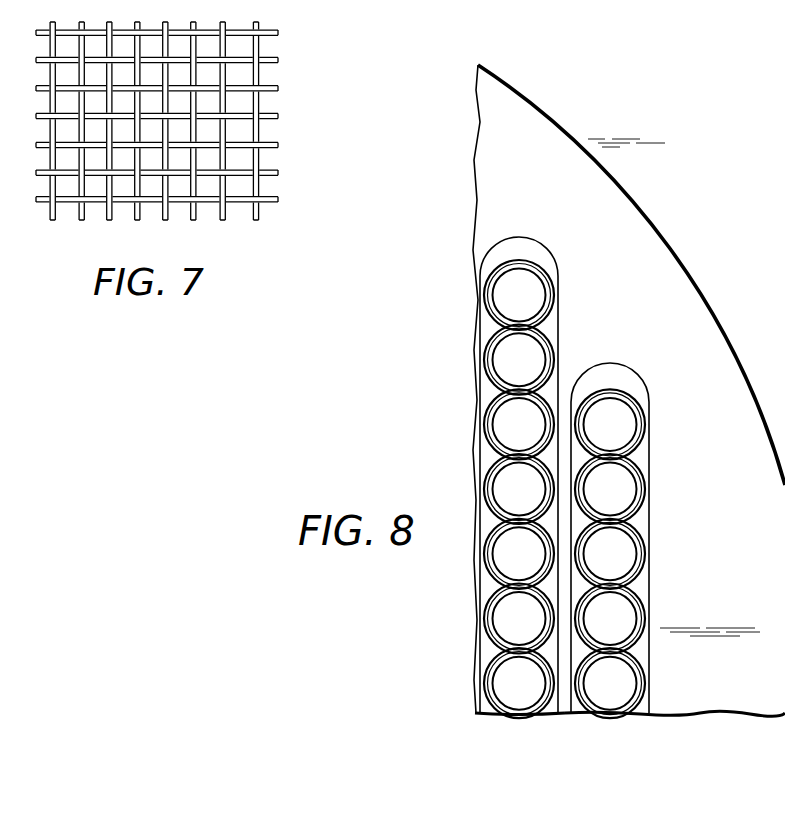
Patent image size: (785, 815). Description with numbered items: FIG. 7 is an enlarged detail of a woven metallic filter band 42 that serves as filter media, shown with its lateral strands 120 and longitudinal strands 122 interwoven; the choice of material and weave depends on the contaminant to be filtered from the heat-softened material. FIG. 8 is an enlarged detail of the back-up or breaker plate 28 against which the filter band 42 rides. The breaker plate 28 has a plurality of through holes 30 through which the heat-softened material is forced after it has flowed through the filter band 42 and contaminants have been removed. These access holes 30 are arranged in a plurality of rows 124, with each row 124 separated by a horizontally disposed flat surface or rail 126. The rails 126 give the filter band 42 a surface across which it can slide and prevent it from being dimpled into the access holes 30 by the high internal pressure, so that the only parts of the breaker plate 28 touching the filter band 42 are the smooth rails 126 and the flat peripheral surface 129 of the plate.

In FIG. 7, the filter band 42 is at (193, 125).
In FIG. 7, the lateral strands 120 is at (259, 218).
In FIG. 7, the longitudinal strands 122 is at (276, 167).
In FIG. 8, the breaker plate 28 is at (698, 290).
In FIG. 8, the through holes 30 is at (633, 406).
In FIG. 8, the horizontal rows 124 is at (528, 236).
In FIG. 8, the rail 126 is at (563, 707).
In FIG. 8, the flat peripheral surface 129 is at (682, 703).